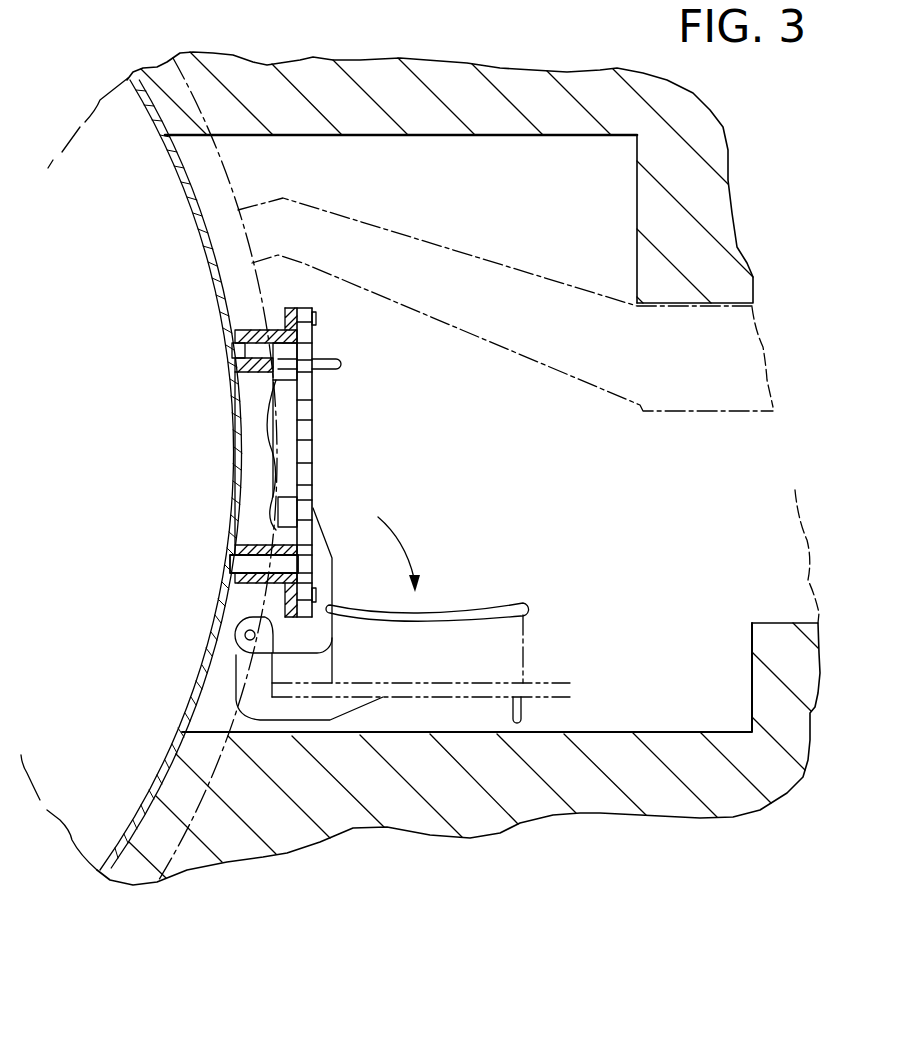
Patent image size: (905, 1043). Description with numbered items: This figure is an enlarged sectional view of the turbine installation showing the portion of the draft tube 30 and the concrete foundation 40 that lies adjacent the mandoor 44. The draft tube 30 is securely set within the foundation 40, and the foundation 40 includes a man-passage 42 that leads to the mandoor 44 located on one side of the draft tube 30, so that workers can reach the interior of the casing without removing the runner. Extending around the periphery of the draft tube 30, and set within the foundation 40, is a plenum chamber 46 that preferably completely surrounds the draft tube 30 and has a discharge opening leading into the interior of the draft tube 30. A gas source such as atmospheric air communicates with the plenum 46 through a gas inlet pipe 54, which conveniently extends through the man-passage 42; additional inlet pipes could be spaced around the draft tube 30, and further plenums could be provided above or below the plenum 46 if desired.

The draft tube 30 is at (204, 262).
The concrete foundation 40 is at (367, 90).
The man-passage 42 is at (648, 509).
The mandoor 44 is at (324, 458).
The plenum chamber 46 is at (202, 180).
The gas inlet pipe 54 is at (553, 370).